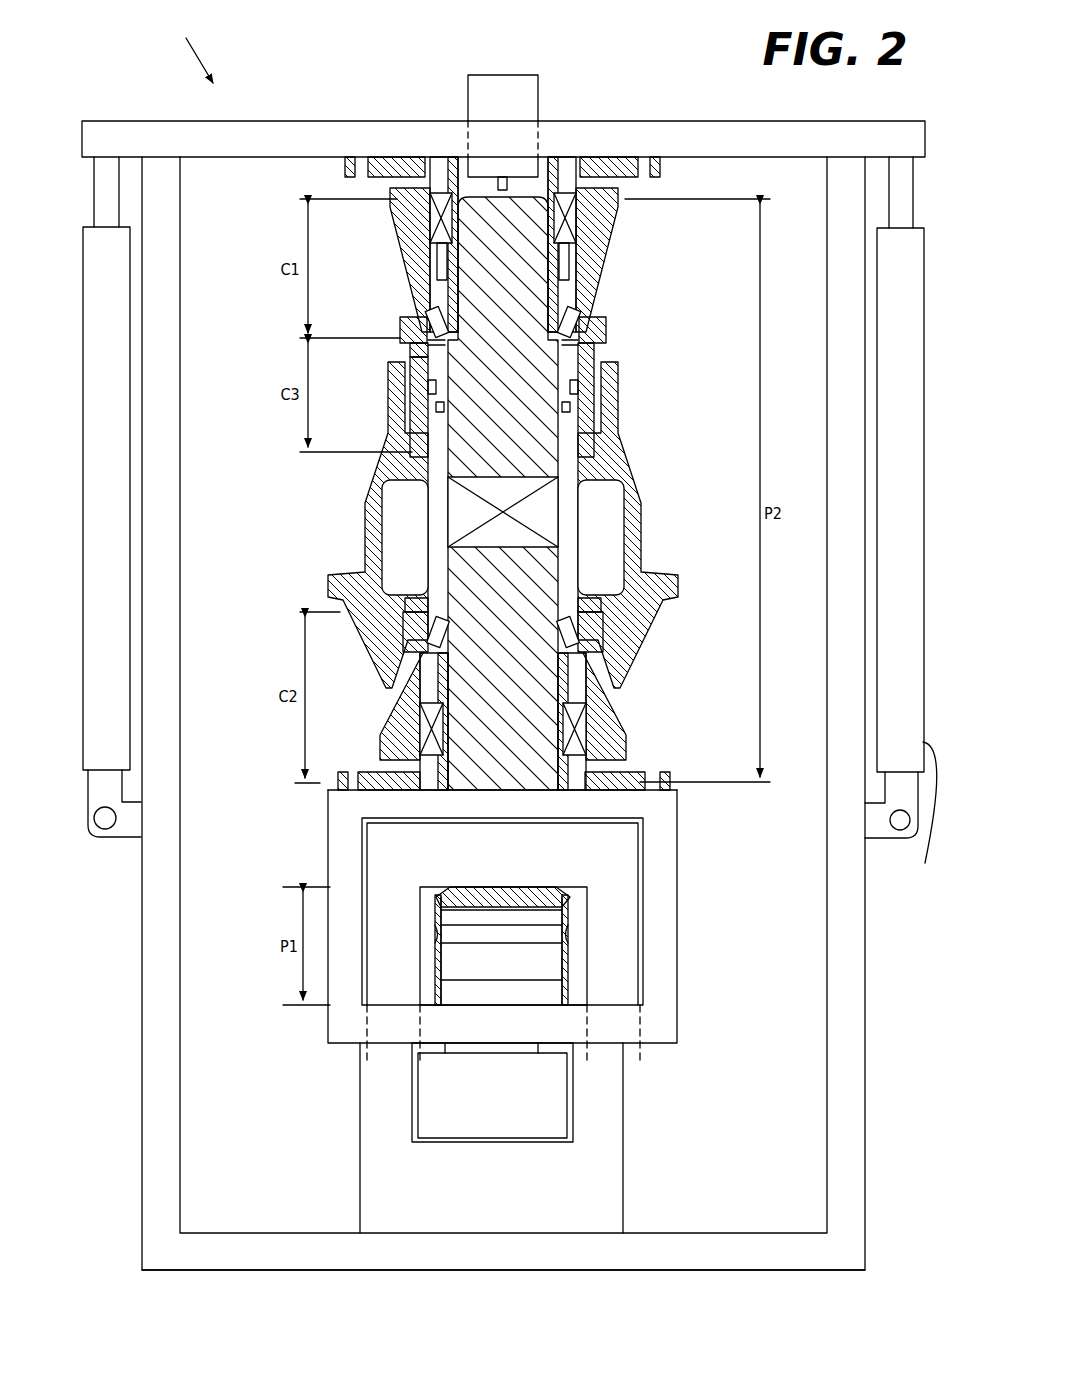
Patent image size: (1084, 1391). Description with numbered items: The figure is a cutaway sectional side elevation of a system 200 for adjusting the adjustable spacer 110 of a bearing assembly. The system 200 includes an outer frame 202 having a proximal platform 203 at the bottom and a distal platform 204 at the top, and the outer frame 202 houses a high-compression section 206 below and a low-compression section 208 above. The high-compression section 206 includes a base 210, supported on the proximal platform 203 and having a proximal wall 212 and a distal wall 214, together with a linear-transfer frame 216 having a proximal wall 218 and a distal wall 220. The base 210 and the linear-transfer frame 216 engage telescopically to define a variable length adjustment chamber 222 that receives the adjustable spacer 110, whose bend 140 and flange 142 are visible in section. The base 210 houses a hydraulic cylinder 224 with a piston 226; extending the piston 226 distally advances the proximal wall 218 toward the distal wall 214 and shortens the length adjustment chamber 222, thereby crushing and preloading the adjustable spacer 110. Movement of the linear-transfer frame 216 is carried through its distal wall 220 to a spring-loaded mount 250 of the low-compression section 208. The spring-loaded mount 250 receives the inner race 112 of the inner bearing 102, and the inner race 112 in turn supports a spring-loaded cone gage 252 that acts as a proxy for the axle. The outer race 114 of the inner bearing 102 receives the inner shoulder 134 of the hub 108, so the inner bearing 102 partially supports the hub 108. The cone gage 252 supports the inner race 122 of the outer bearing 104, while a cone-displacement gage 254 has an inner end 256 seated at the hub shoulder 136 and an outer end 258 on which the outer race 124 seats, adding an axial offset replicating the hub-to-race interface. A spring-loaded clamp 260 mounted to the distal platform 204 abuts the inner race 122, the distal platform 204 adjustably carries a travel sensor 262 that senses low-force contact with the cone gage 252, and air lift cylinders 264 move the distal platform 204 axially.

The system 200 is at (183, 45).
The outer frame 202 is at (850, 953).
The proximal platform 203 is at (483, 1262).
The distal platform 204 is at (652, 140).
The high-compression section 206 is at (295, 795).
The low-compression section 208 is at (288, 738).
The base 210 is at (600, 1192).
The proximal wall 212 is at (477, 1194).
The distal wall 214 is at (487, 854).
The linear-transfer frame 216 is at (660, 1007).
The proximal wall 218 is at (487, 1021).
The distal wall 220 is at (487, 805).
The length adjustment chamber 222 is at (580, 992).
The hydraulic cylinder 224 is at (540, 1122).
The piston 226 is at (496, 1048).
The spring-loaded mount 250 is at (390, 712).
The spring-loaded cone gage 252 is at (428, 538).
The cone-displacement gage 254 is at (588, 357).
The inner end 256 is at (420, 450).
The outer end 258 is at (405, 350).
The spring-loaded clamp 260 is at (400, 236).
The travel sensor 262 is at (520, 96).
The air lift cylinder 264 is at (922, 817).
The inner bearing 102 is at (618, 634).
The outer bearing 104 is at (600, 300).
The hub 108 is at (620, 455).
The adjustable spacer 110 is at (548, 968).
The inner race 112 is at (432, 652).
The outer race 114 is at (405, 626).
The inner race 122 is at (442, 305).
The outer race 124 is at (405, 330).
The inner shoulder 134 is at (416, 600).
The shoulder 136 is at (417, 466).
The bend 140 is at (568, 935).
The flange 142 is at (560, 902).